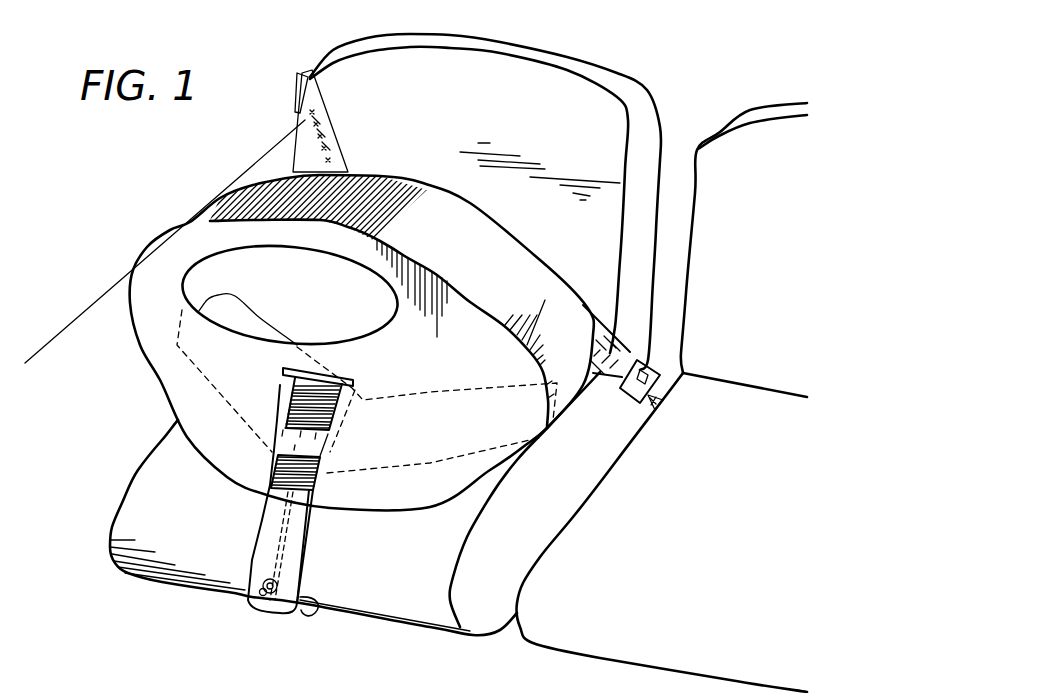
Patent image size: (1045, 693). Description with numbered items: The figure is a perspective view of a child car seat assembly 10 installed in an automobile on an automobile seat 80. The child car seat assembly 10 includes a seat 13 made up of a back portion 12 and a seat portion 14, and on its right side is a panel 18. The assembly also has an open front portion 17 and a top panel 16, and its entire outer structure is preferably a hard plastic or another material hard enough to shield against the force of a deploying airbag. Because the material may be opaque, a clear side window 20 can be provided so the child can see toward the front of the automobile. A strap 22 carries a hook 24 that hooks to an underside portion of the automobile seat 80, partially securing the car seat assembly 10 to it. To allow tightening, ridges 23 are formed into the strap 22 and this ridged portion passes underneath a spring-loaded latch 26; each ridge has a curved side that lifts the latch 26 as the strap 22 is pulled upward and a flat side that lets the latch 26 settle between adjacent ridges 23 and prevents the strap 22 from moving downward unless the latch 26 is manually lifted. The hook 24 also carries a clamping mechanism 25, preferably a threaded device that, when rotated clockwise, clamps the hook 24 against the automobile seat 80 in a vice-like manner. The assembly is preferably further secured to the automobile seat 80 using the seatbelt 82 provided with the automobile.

The child car seat assembly 10 is at (217, 203).
The back portion 12 is at (197, 352).
The seat 13 is at (255, 400).
The seat portion 14 is at (447, 435).
The top panel 16 is at (273, 187).
The open front portion 17 is at (500, 257).
The panel 18 is at (153, 293).
The clear side window 20 is at (212, 278).
The strap 22 is at (288, 555).
The ridges 23 is at (275, 472).
The hook 24 is at (303, 617).
The clamping mechanism 25 is at (262, 593).
The spring-loaded latch 26 is at (313, 447).
The automobile seat 80 is at (548, 127).
The seatbelt 82 is at (320, 117).